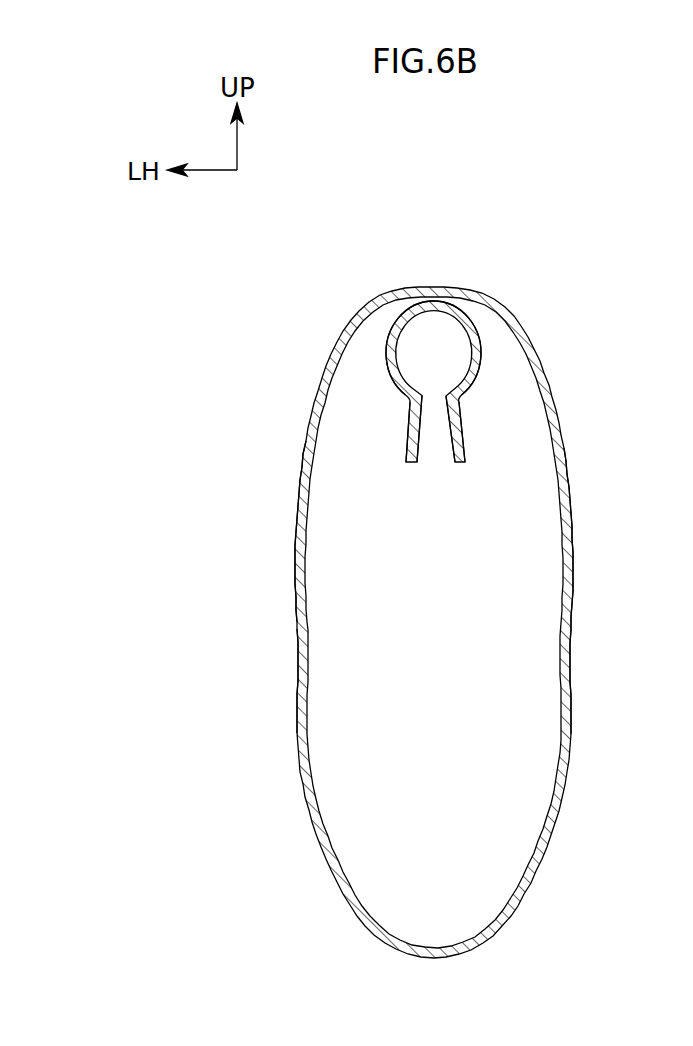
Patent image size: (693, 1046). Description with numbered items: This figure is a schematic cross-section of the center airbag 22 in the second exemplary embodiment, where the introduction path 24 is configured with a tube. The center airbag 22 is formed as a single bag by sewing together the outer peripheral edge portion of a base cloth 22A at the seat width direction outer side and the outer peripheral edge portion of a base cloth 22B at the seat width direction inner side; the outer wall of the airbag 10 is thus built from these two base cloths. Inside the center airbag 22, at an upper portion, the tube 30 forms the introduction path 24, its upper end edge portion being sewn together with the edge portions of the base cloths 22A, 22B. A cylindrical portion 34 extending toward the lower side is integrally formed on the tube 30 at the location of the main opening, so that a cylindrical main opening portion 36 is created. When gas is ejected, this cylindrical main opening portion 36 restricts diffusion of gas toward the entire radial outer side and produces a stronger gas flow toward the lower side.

The weather strip 10 is at (326, 282).
The center airbag 22 is at (572, 418).
The base cloth at seat width direction outer side 22A is at (295, 584).
The base cloth at seat width direction inner side 22B is at (573, 575).
The introduction path 24 is at (500, 341).
The tube 30 is at (372, 379).
The cylindrical portion 34 is at (407, 438).
The cylindrical main opening portion 36 is at (460, 462).